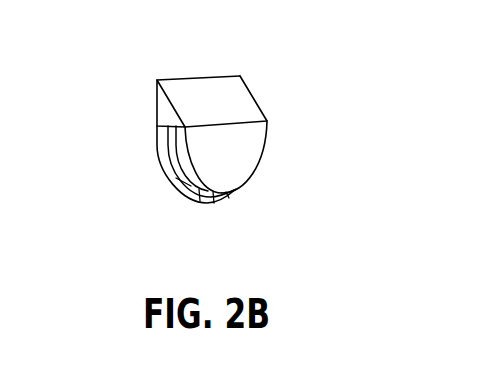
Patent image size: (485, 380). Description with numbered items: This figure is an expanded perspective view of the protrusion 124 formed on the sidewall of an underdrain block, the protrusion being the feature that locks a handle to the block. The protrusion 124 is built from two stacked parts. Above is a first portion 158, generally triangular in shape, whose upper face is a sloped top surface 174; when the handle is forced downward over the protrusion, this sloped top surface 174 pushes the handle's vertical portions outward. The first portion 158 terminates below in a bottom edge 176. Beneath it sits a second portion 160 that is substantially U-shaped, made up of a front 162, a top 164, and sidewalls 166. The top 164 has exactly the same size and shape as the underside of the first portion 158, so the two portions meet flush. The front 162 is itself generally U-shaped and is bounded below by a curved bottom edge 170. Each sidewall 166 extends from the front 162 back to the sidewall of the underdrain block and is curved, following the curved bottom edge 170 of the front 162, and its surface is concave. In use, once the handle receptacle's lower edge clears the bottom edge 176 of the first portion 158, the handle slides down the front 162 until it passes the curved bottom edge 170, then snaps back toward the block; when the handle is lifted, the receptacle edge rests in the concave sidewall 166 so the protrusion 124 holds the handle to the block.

The protrusion 124 is at (130, 52).
The sloped top surface 174 is at (213, 85).
The first portion 158 is at (237, 103).
The second portion 160 is at (247, 150).
The front 162 is at (235, 170).
The top 164 is at (183, 124).
The bottom edge 176 is at (185, 143).
The sidewall 166 is at (197, 203).
The curved bottom edge 170 is at (225, 193).